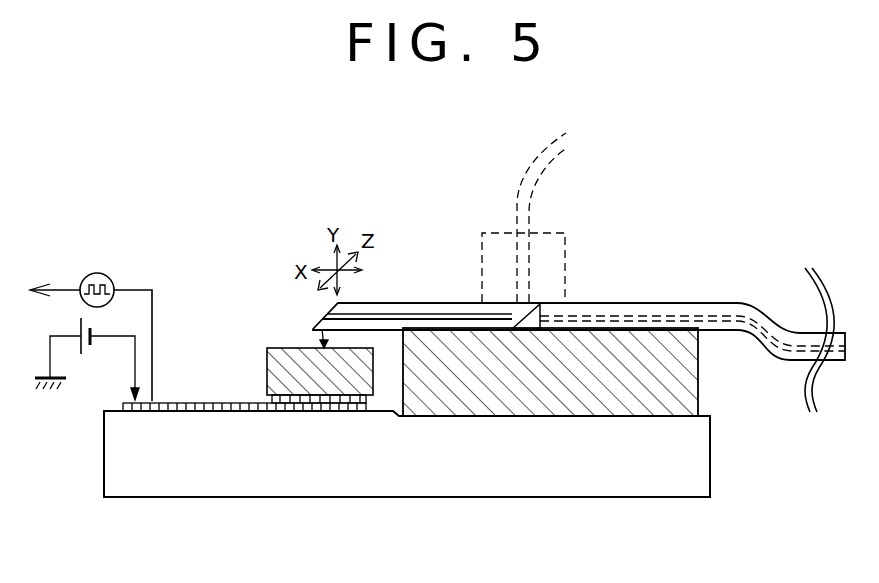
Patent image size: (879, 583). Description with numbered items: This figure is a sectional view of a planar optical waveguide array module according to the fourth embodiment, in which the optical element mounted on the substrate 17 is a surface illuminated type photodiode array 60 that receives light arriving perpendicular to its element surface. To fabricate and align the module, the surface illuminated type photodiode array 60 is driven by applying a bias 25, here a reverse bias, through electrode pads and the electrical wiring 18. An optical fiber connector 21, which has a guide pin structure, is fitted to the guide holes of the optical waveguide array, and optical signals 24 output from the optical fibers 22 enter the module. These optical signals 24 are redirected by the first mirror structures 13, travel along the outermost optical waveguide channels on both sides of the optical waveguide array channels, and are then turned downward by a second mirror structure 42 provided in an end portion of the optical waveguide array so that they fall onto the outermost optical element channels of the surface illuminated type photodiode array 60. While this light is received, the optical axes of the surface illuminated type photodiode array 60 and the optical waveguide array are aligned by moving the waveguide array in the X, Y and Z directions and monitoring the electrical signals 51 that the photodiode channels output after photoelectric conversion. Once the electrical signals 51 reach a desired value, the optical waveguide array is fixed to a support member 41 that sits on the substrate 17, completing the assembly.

The first mirror structure 13 is at (528, 330).
The substrate 17 is at (310, 440).
The electrical wiring 18 is at (178, 402).
The optical fiber connector 21 is at (493, 248).
The optical fiber 22 is at (528, 215).
The optical signal 24 is at (352, 404).
The bias 25 is at (84, 368).
The support member 41 is at (640, 365).
The second mirror structure 42 is at (313, 328).
The electrical signal 51 is at (131, 288).
The surface illuminated type photodiode array 60 is at (357, 349).